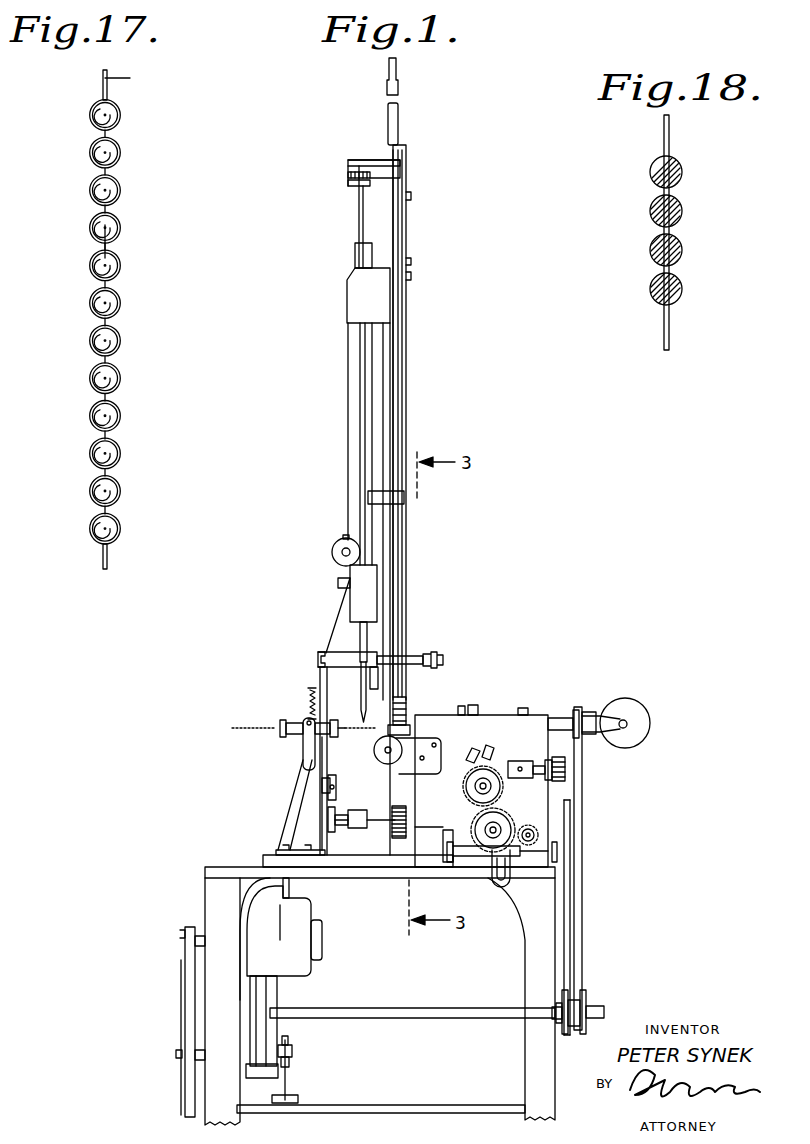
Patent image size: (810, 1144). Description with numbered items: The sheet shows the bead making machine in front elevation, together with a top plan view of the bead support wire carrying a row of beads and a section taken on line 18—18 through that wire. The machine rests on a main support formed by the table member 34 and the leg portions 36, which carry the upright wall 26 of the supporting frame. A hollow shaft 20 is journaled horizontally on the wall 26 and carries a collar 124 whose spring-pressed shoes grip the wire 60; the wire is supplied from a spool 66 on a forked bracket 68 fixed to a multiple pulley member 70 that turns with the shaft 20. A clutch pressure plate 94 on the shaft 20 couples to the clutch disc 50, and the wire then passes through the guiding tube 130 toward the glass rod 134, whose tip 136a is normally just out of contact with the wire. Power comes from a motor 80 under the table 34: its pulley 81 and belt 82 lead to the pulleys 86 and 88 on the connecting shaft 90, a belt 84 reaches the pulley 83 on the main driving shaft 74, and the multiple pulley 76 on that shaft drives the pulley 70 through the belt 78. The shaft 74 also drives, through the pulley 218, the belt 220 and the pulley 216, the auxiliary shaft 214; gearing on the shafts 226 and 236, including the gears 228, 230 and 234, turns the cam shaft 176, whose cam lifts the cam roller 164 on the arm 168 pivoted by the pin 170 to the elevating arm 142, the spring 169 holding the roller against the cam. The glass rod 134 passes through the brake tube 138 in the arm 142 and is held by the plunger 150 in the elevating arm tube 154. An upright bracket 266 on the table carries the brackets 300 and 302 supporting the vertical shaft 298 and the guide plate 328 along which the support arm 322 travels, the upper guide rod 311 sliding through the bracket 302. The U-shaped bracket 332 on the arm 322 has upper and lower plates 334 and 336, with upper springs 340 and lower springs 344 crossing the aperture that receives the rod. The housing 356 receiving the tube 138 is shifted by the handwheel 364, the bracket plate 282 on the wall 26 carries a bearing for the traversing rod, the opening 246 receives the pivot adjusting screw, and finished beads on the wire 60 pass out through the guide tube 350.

In FIG. 17, the section line 18— 18 is at (112, 80).
In FIG. 17, the tip of the glass rod 136a is at (98, 185).
In FIG. 18, the tip of the glass rod 136a is at (683, 171).
In FIG. 17, the wire 60 is at (110, 560).
In FIG. 18, the wire 60 is at (669, 335).
In FIG. 1, the upper guide rod 311 is at (398, 115).
In FIG. 1, the U-shaped bracket 332 is at (372, 158).
In FIG. 1, the upper plate 334 is at (350, 160).
In FIG. 1, the upper pair of springs 340 is at (348, 175).
In FIG. 1, the lower pair of springs 344 is at (348, 184).
In FIG. 1, the lower plate 336 is at (361, 200).
In FIG. 1, the support arm 322 is at (407, 233).
In FIG. 1, the bracket 302 is at (380, 309).
In FIG. 1, the guide plate 328 is at (406, 353).
In FIG. 1, the glass rod 134 is at (360, 441).
In FIG. 1, the bracket 300 is at (392, 500).
In FIG. 1, the handwheel 364 is at (332, 552).
In FIG. 1, the housing 356 is at (362, 590).
In FIG. 1, the elevating arm tube 154 is at (405, 650).
In FIG. 1, the push plunger 150 is at (428, 654).
In FIG. 1, the upright bracket 266 is at (340, 606).
In FIG. 1, the brake tube 138 is at (360, 634).
In FIG. 1, the vertical shaft 298 is at (418, 690).
In FIG. 1, the elevating arm 142 is at (344, 658).
In FIG. 1, the pin 170 is at (318, 665).
In FIG. 1, the arm 168 is at (318, 681).
In FIG. 1, the spring 169 is at (306, 703).
In FIG. 1, the wire guiding tube 130 is at (408, 715).
In FIG. 1, the clutch disc 50 is at (461, 705).
In FIG. 1, the clutch pressure plate 94 is at (473, 705).
In FIG. 1, the upright wall 26 is at (499, 715).
In FIG. 1, the collar 124 is at (524, 707).
In FIG. 1, the hollow shaft 20 is at (560, 716).
In FIG. 1, the multiple pulley member 70 is at (579, 711).
In FIG. 1, the spool 66 is at (632, 701).
In FIG. 1, the forked bracket 68 is at (648, 736).
In FIG. 1, the guide tube 350 is at (290, 739).
In FIG. 1, the cam roller 164 is at (334, 779).
In FIG. 1, the bracket plate 282 is at (432, 750).
In FIG. 1, the gear 234 is at (488, 768).
In FIG. 1, the shaft 236 is at (476, 788).
In FIG. 1, the gear 230 is at (502, 815).
In FIG. 1, the shaft 226 is at (526, 826).
In FIG. 1, the opening 246 is at (568, 769).
In FIG. 1, the cam shaft 176 is at (406, 819).
In FIG. 1, the belt 78 is at (583, 804).
In FIG. 1, the table member 34 is at (221, 866).
In FIG. 1, the pulley 216 is at (576, 869).
In FIG. 1, the leg portions 36 is at (217, 896).
In FIG. 1, the motor 80 is at (312, 903).
In FIG. 1, the auxiliary shaft 214 is at (462, 858).
In FIG. 1, the second gear 228 is at (523, 852).
In FIG. 1, the belt 220 is at (570, 931).
In FIG. 1, the pulley 81 is at (186, 946).
In FIG. 1, the pulley 83 is at (271, 988).
In FIG. 1, the belt 82 is at (187, 986).
In FIG. 1, the main driving shaft 74 is at (410, 1008).
In FIG. 1, the belt 84 is at (264, 996).
In FIG. 1, the multiple pulley 76 is at (585, 991).
In FIG. 1, the pulley 86 is at (184, 1026).
In FIG. 1, the pulley 88 is at (275, 1038).
In FIG. 1, the connecting shaft 90 is at (200, 1063).
In FIG. 1, the pulley 218 is at (565, 1026).